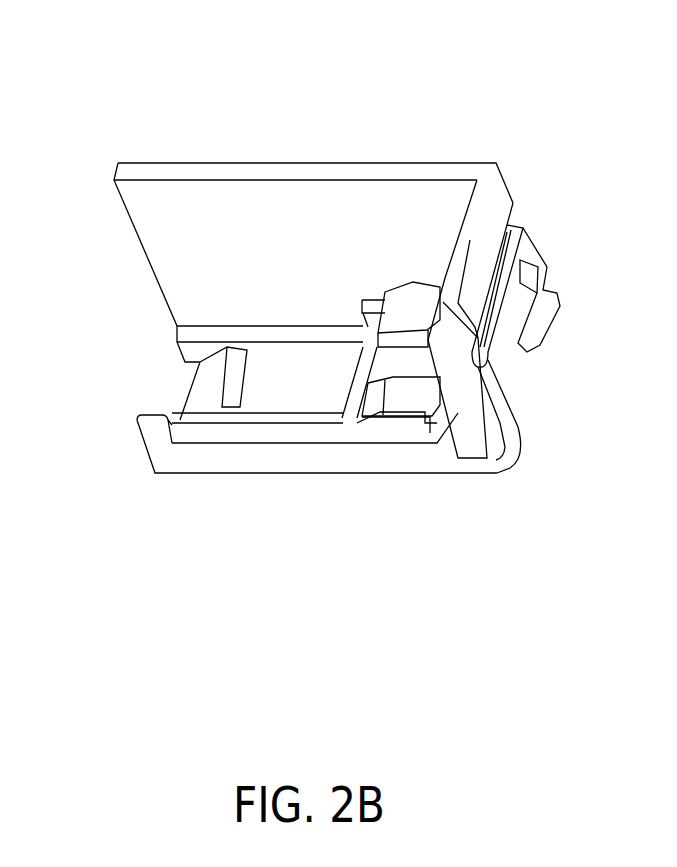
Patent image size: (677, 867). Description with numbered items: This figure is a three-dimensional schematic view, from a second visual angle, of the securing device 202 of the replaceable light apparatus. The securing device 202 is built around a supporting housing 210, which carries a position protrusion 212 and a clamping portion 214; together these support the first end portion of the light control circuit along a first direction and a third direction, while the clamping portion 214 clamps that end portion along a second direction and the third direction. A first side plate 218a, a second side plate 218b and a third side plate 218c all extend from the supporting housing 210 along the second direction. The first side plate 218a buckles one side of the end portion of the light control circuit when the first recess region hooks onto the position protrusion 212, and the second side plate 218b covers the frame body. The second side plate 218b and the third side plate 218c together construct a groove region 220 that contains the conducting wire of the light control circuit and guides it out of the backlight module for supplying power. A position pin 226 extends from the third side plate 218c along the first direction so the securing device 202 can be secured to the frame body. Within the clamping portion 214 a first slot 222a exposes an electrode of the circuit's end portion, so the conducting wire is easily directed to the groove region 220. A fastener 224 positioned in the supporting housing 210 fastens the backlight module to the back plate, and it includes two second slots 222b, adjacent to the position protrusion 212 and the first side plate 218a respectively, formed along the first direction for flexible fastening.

The securing device 202 is at (561, 31).
The supporting housing 210 is at (232, 473).
The position protrusion 212 is at (135, 419).
The clamping portion 214 is at (400, 288).
The first side plate 218a is at (255, 163).
The second side plate 218b is at (481, 398).
The third side plate 218c is at (524, 400).
The groove region 220 is at (503, 452).
The first slot 222a is at (381, 359).
The second slot 222b is at (221, 412).
The fastener 224 is at (225, 378).
The position pin 226 is at (447, 265).